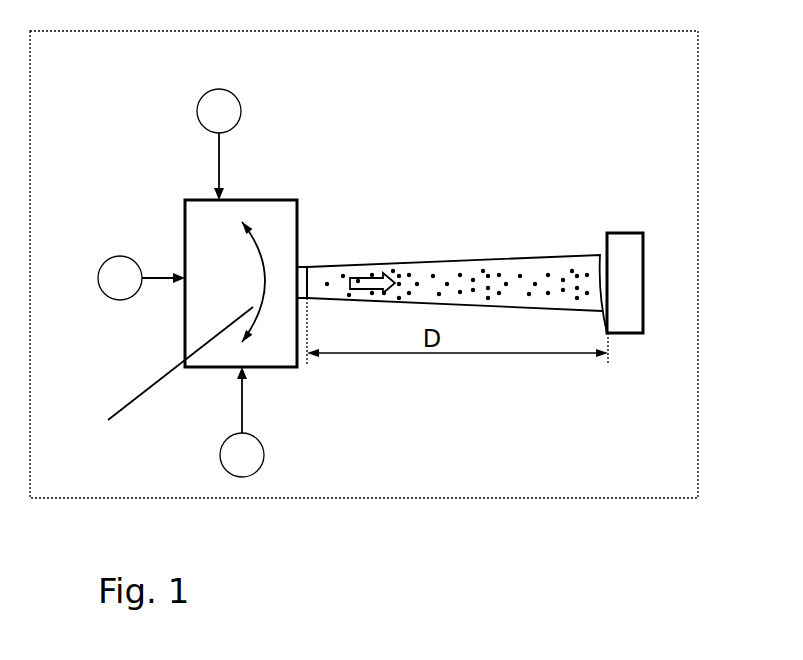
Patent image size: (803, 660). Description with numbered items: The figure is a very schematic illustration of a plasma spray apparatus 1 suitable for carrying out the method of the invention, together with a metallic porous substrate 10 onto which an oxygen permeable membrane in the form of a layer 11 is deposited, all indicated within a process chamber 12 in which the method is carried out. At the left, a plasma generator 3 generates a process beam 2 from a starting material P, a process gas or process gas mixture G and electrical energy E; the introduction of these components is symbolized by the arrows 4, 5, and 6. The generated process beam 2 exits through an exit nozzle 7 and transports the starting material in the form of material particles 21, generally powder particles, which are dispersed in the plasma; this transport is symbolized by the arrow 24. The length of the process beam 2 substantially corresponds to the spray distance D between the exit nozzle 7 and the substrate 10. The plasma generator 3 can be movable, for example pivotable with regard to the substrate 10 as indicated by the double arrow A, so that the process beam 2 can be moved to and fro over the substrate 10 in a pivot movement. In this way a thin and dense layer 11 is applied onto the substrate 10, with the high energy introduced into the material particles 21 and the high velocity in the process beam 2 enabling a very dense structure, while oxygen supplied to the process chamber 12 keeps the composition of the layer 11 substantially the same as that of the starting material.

The plasma spray apparatus 1 is at (314, 96).
The process beam 2 is at (416, 251).
The plasma generator 3 is at (185, 330).
The arrow 4 is at (242, 398).
The arrow 5 is at (152, 272).
The arrow 6 is at (218, 163).
The exit nozzle 7 is at (305, 267).
The metallic porous substrate 10 is at (643, 252).
The layer 11 is at (600, 253).
The process chamber 12 is at (597, 498).
The material particles 21 is at (522, 275).
The arrow 24 is at (363, 287).